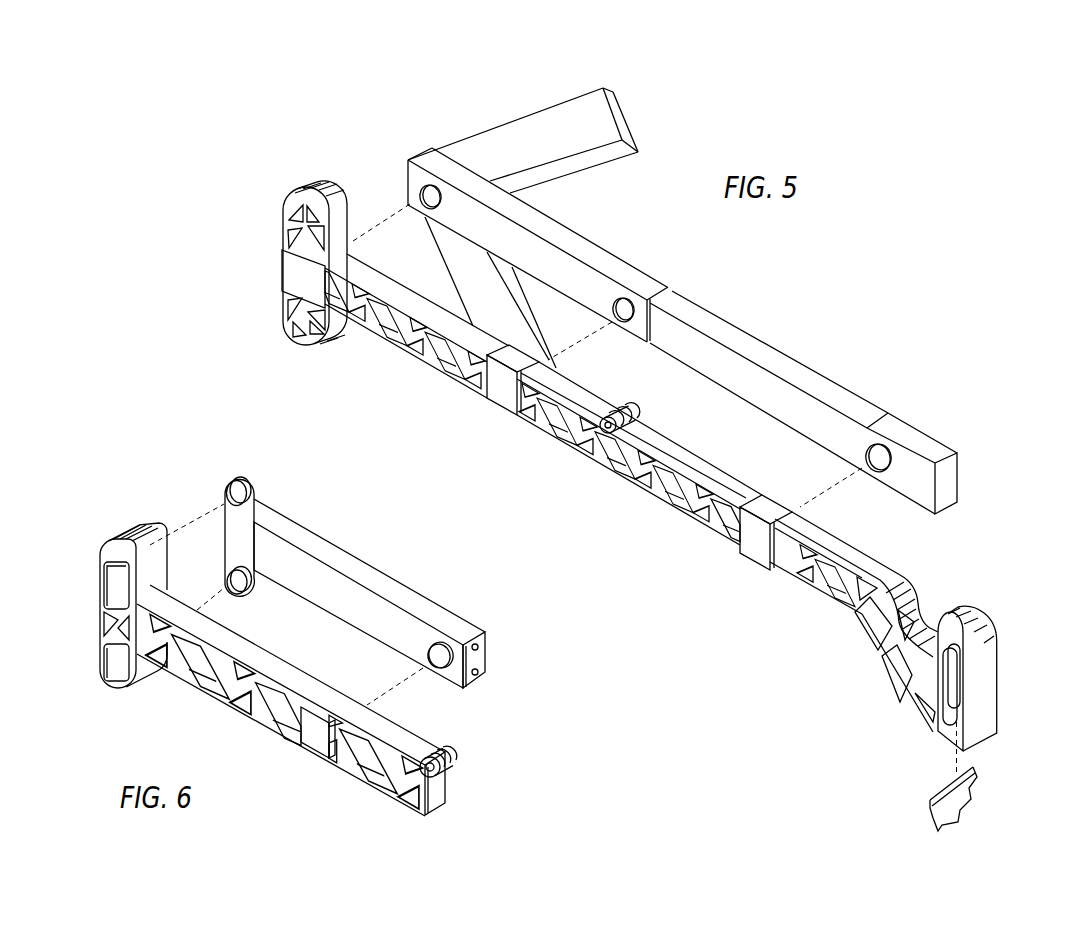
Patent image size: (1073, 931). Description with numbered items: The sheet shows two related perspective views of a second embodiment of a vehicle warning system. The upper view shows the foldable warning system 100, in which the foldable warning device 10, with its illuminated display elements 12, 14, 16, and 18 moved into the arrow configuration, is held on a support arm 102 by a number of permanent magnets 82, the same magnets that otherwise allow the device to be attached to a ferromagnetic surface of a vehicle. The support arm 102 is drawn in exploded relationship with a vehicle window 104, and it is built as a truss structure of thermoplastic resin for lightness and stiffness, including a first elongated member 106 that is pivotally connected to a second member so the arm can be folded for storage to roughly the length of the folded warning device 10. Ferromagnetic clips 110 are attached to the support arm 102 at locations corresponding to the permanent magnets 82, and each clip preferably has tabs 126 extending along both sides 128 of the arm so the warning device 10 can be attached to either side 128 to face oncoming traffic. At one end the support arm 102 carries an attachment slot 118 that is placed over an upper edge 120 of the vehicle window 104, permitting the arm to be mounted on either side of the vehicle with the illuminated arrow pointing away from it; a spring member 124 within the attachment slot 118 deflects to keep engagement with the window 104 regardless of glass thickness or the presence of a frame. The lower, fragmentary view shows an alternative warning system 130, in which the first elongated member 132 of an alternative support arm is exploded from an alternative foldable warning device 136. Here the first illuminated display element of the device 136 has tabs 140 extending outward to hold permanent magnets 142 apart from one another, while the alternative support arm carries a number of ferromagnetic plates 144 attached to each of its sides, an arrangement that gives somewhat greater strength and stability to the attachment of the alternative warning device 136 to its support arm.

In FIG. 5, the foldable warning device 10 is at (639, 260).
In FIG. 5, the illuminated display element 12 is at (557, 181).
In FIG. 5, the illuminated display element 14 is at (438, 248).
In FIG. 5, the illuminated display element 16 is at (515, 134).
In FIG. 5, the illuminated display element 18 is at (729, 318).
In FIG. 5, the permanent magnets 82 is at (407, 206).
In FIG. 5, the foldable warning system 100 is at (822, 333).
In FIG. 5, the support arm 102 is at (650, 508).
In FIG. 5, the vehicle window 104 is at (960, 800).
In FIG. 5, the first elongated member 106 is at (422, 364).
In FIG. 5, the ferromagnetic clips 110 is at (748, 563).
In FIG. 5, the attachment slot 118 is at (602, 434).
In FIG. 5, the upper edge 120 is at (945, 787).
In FIG. 5, the spring member 124 is at (958, 698).
In FIG. 5, the tabs 126 is at (300, 278).
In FIG. 5, the sides 128 is at (594, 386).
In FIG. 6, the alternative warning system 130 is at (233, 705).
In FIG. 6, the first elongated member 132 is at (313, 760).
In FIG. 6, the alternative foldable warning device 136 is at (427, 599).
In FIG. 6, the tabs 140 is at (256, 489).
In FIG. 6, the permanent magnets 142 is at (228, 497).
In FIG. 6, the ferromagnetic plates 144 is at (117, 582).